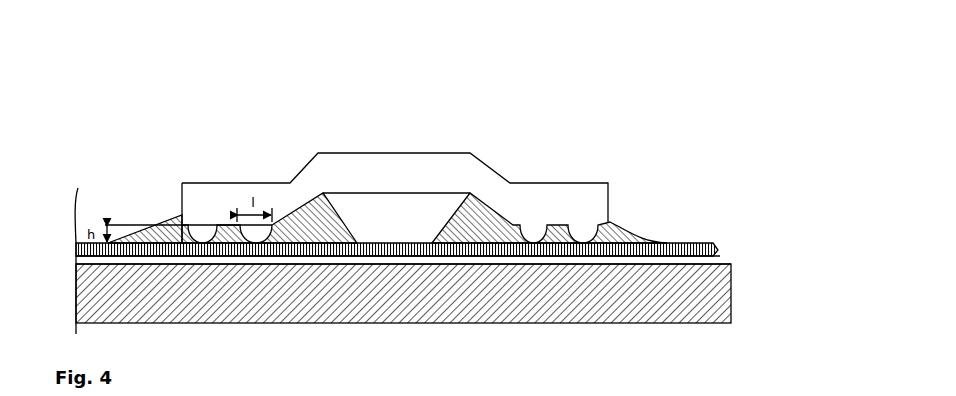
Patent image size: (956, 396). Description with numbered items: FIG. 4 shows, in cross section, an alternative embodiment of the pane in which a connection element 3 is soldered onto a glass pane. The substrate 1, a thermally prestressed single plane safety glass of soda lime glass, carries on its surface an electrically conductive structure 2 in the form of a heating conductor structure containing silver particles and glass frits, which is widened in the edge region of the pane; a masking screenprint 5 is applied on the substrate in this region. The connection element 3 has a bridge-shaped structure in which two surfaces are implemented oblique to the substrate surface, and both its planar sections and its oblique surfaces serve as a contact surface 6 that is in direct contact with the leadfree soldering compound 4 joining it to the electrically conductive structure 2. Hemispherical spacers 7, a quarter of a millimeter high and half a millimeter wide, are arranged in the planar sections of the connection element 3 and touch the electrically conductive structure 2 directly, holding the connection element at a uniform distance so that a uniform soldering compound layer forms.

The substrate 1 is at (732, 300).
The electrically conductive structure 2 is at (717, 243).
The connection element 3 is at (580, 200).
The leadfree soldering compound 4 is at (306, 204).
The masking screenprint 5 is at (720, 262).
The contact surface 6 is at (559, 222).
The spacer 7 is at (203, 225).